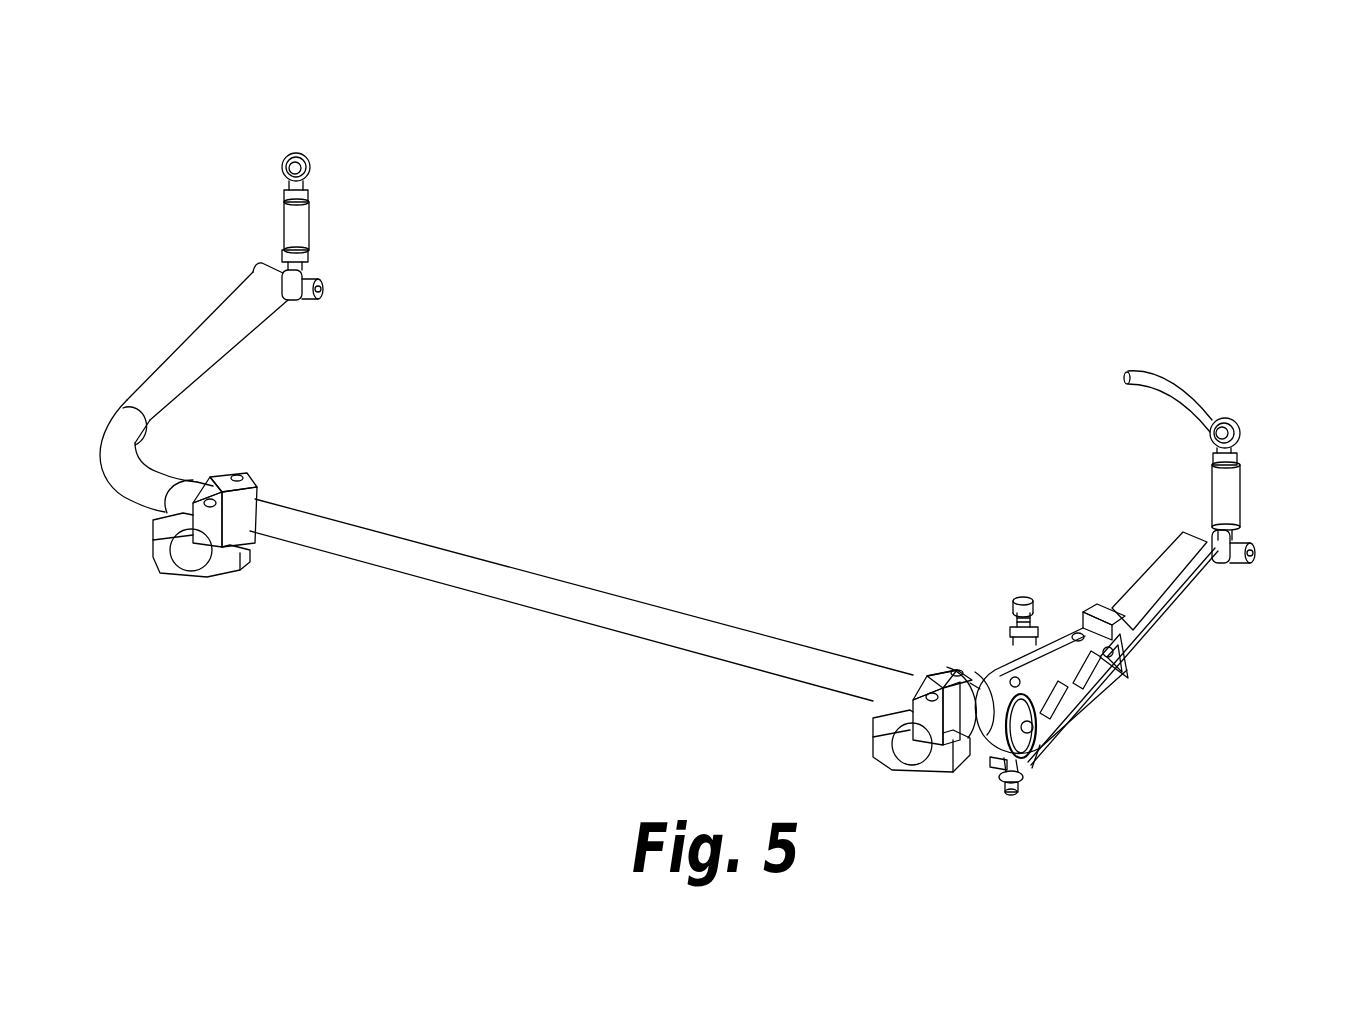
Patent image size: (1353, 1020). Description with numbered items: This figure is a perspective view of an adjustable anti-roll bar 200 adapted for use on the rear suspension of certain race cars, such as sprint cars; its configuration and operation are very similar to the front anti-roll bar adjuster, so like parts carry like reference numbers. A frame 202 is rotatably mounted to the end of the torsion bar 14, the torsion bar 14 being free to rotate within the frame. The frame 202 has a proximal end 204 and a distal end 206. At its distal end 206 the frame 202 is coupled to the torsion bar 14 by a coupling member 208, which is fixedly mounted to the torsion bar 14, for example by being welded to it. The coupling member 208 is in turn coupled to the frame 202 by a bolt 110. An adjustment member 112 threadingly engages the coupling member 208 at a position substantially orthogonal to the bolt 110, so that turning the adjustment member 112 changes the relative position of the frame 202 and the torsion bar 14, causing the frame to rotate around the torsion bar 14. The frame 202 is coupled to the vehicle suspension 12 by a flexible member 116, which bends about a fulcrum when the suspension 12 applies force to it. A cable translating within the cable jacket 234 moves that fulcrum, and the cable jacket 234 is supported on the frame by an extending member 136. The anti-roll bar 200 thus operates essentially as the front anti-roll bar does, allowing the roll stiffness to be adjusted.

The adjustable anti-roll bar 200 is at (772, 200).
The vehicle suspension 12 is at (312, 230).
The torsion bar 14 is at (540, 613).
The bolt 110 is at (1088, 695).
The adjustment member 112 is at (1014, 602).
The flexible member 116 is at (1157, 567).
The extending member 136 is at (1133, 672).
The frame 202 is at (1058, 637).
The proximal end 204 is at (1099, 585).
The distal end 206 is at (1010, 826).
The coupling member 208 is at (985, 668).
The cable jacket 234 is at (1150, 370).